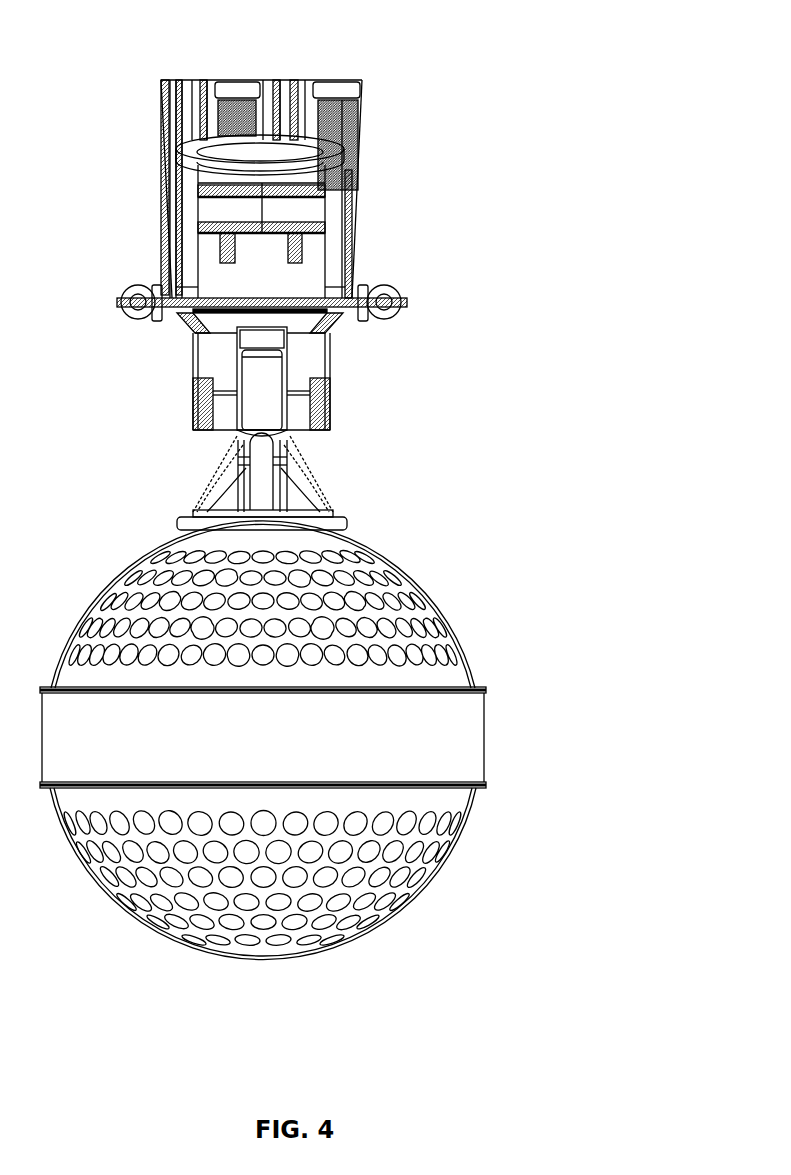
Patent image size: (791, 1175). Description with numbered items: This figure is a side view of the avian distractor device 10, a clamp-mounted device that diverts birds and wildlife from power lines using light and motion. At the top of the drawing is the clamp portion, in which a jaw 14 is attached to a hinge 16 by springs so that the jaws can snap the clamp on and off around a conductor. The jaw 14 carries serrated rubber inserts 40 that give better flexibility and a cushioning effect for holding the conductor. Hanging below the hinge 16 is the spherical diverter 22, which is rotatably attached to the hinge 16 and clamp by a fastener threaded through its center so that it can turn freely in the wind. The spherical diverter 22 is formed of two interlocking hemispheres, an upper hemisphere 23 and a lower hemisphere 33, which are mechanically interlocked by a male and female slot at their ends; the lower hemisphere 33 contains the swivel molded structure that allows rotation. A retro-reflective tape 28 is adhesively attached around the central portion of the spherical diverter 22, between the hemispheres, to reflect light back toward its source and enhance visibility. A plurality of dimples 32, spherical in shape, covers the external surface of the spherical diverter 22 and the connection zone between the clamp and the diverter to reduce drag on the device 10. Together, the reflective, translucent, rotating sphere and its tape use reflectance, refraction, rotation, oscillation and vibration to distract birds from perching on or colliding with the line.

The avian distractor device 10 is at (372, 40).
The jaw 14 is at (320, 242).
The hinge 16 is at (308, 486).
The spherical diverter 22 is at (418, 598).
The upper hemisphere 23 is at (425, 633).
The retro-reflective tape 28 is at (468, 730).
The dimples 32 is at (372, 578).
The lower hemisphere 33 is at (455, 823).
The rubber inserts 40 is at (345, 128).